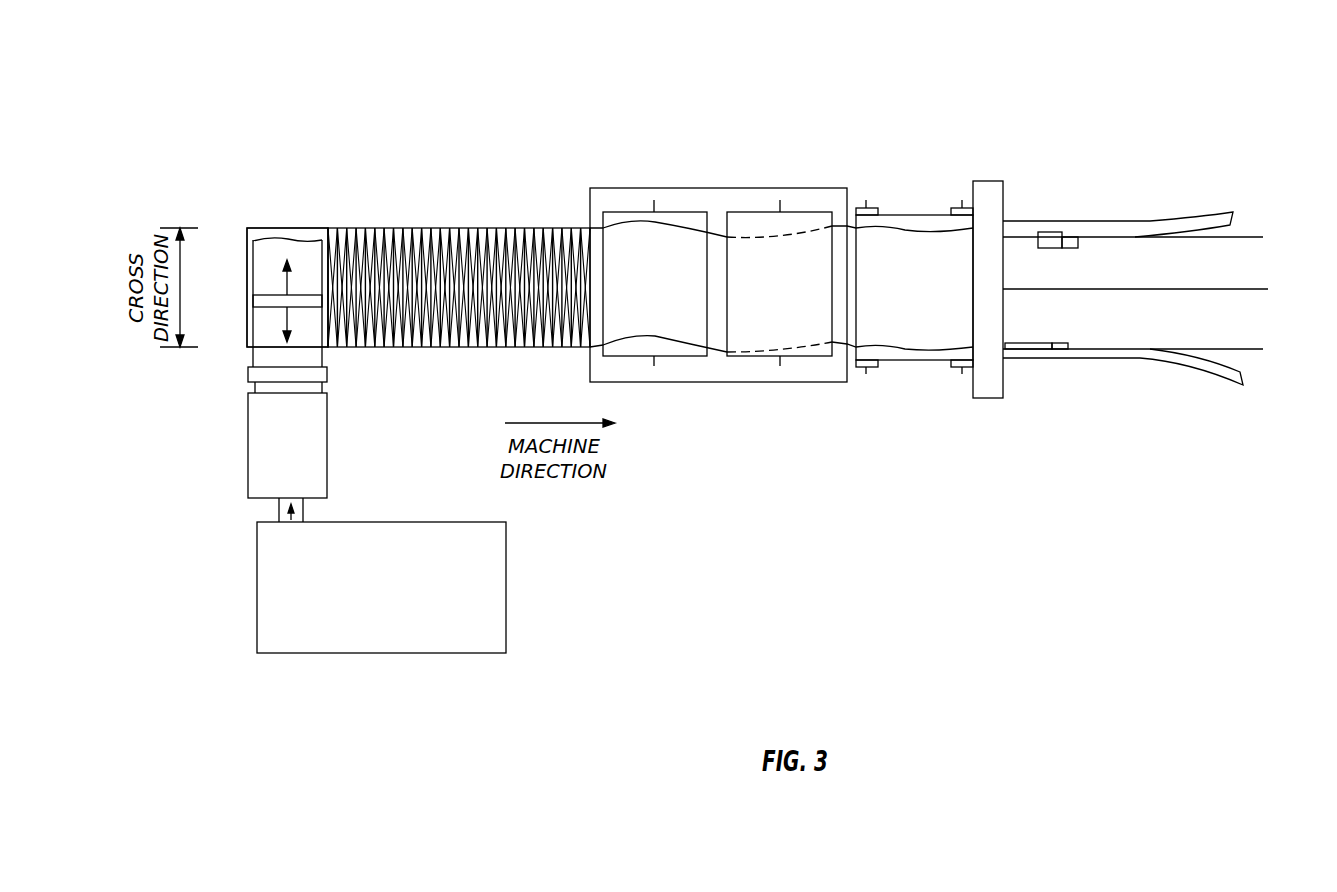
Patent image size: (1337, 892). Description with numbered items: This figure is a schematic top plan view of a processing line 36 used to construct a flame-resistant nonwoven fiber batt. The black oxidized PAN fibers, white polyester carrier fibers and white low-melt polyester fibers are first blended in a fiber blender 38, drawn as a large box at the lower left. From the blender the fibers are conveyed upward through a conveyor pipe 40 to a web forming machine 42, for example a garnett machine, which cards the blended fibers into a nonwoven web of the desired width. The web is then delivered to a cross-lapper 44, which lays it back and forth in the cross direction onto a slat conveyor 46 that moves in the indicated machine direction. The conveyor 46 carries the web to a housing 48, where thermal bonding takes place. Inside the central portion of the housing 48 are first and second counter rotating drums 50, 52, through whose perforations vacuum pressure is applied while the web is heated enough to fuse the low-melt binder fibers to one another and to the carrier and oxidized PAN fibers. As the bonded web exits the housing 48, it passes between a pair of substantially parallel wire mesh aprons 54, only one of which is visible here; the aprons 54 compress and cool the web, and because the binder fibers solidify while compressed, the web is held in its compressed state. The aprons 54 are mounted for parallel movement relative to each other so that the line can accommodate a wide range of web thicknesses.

The processing line 36 is at (236, 64).
The fiber blender 38 is at (498, 577).
The conveyor pipe 40 is at (303, 508).
The web forming machine 42 is at (328, 446).
The cross-lapper 44 is at (268, 298).
The slat conveyor 46 is at (517, 227).
The housing 48 is at (808, 193).
The first counter rotating drum 50 is at (612, 347).
The second counter rotating drum 52 is at (815, 350).
The wire mesh aprons 54 is at (882, 238).